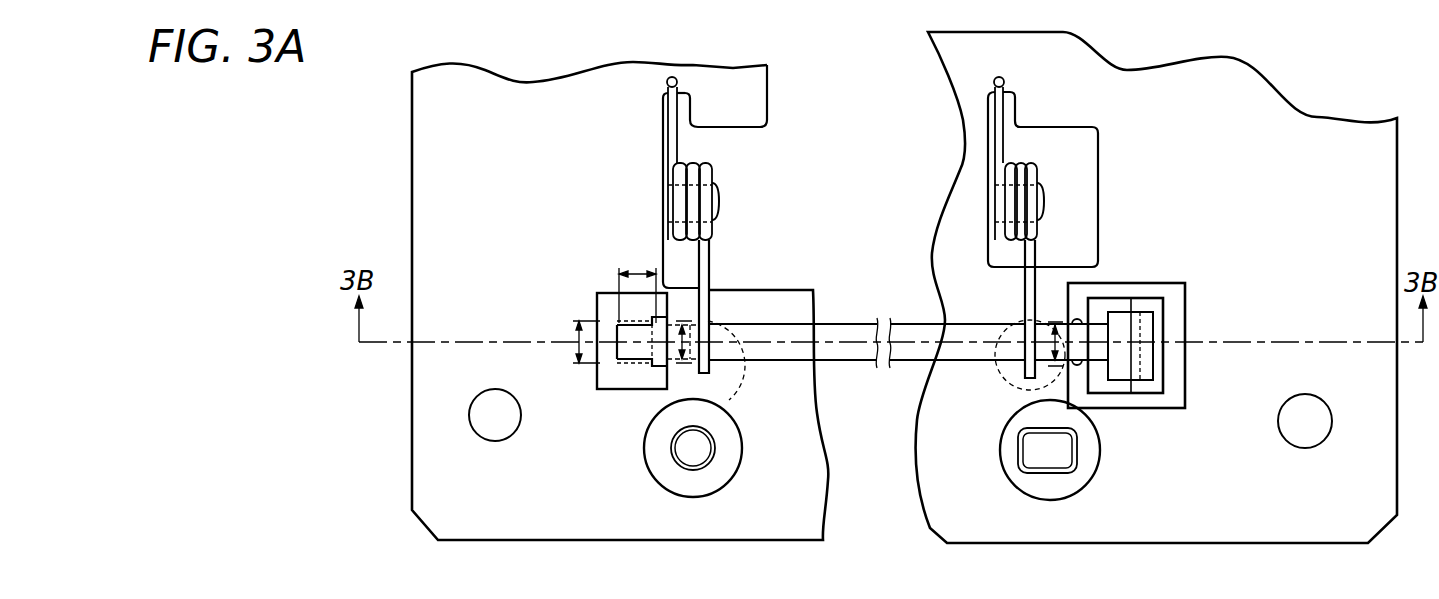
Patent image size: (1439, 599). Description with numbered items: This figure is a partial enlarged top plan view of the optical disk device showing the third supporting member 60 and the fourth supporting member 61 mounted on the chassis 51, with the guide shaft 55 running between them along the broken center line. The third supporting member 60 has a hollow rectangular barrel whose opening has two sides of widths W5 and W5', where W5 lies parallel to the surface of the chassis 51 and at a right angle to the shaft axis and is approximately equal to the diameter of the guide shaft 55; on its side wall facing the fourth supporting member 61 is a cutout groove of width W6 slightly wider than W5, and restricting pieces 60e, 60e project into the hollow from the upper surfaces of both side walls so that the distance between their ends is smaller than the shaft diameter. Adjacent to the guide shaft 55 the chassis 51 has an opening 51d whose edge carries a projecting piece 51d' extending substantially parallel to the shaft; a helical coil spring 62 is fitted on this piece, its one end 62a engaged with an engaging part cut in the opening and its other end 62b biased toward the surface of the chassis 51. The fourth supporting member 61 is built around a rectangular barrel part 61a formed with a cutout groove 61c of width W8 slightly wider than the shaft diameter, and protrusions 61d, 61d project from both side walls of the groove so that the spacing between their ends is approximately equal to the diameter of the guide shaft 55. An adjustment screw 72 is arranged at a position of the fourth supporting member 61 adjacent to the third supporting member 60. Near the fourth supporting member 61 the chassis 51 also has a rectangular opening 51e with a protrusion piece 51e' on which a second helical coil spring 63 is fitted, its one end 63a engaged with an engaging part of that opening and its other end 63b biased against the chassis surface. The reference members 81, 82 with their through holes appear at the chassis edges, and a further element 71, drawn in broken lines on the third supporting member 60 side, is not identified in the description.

The chassis 51 is at (805, 512).
The opening 51d is at (749, 190).
The projecting piece 51d' is at (741, 201).
The rectangular-shaped opening 51e is at (1078, 179).
The protrusion piece 51e' is at (1077, 201).
The guide shaft 55 is at (852, 332).
The third supporting member 60 is at (595, 298).
The restricting pieces 60e is at (626, 330).
The fourth supporting member 61 is at (1165, 354).
The barrel part 61a is at (1158, 405).
The cutout groove 61c is at (1090, 358).
The protrusions 61d is at (1078, 322).
The helical coil spring 62 is at (714, 263).
The one end of helical coil spring 62a is at (678, 85).
The other end of helical coil spring 62b is at (712, 374).
The helical coil spring 63 is at (1020, 302).
The one end of helical coil spring 63a is at (1005, 86).
The other end of helical coil spring 63b is at (1026, 375).
The bearing 71 is at (750, 386).
The adjustment screw 72 is at (1009, 364).
The reference member 81 is at (646, 459).
The reference member 82 is at (1092, 481).
The width W5 is at (544, 331).
The width W5' is at (634, 259).
The width of cutout groove W6 is at (700, 325).
The width of cutout groove W8 is at (1042, 324).